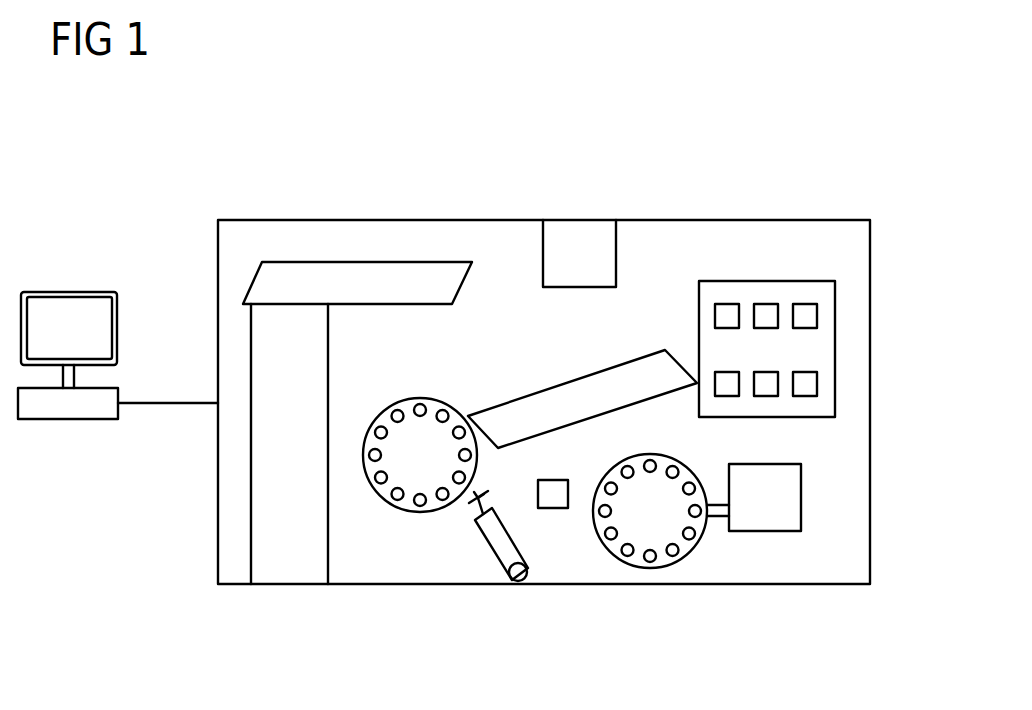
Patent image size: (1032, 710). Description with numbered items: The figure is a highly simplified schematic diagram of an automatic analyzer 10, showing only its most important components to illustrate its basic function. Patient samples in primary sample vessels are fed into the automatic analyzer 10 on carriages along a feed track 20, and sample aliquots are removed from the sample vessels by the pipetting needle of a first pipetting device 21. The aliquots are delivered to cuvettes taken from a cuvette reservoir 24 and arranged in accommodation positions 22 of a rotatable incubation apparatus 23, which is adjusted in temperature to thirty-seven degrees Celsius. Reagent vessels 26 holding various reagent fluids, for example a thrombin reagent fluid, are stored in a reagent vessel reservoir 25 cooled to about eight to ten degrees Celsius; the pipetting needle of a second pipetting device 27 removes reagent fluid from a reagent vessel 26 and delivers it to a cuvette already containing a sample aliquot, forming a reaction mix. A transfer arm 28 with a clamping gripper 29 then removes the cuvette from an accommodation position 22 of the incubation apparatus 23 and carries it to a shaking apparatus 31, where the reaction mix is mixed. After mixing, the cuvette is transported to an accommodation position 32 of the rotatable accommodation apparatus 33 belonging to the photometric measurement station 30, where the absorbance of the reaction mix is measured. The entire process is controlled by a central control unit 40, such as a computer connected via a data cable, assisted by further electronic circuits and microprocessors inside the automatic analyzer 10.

The automatic analyzer 10 is at (833, 602).
The feed track 20 is at (250, 520).
The first pipetting device 21 is at (388, 262).
The accommodation positions 22 is at (457, 497).
The rotatable incubation apparatus 23 is at (420, 512).
The cuvette reservoir 24 is at (584, 219).
The reagent vessel reservoir 25 is at (758, 281).
The reagent vessels 26 is at (818, 316).
The second pipetting device 27 is at (583, 377).
The transfer arm 28 is at (522, 585).
The clamping gripper 29 is at (483, 496).
The photometric measurement station 30 is at (767, 531).
The shaking apparatus 31 is at (555, 480).
The accommodation position 32 is at (601, 540).
The rotatable accommodation apparatus 33 is at (645, 568).
The central control unit 40 is at (68, 292).